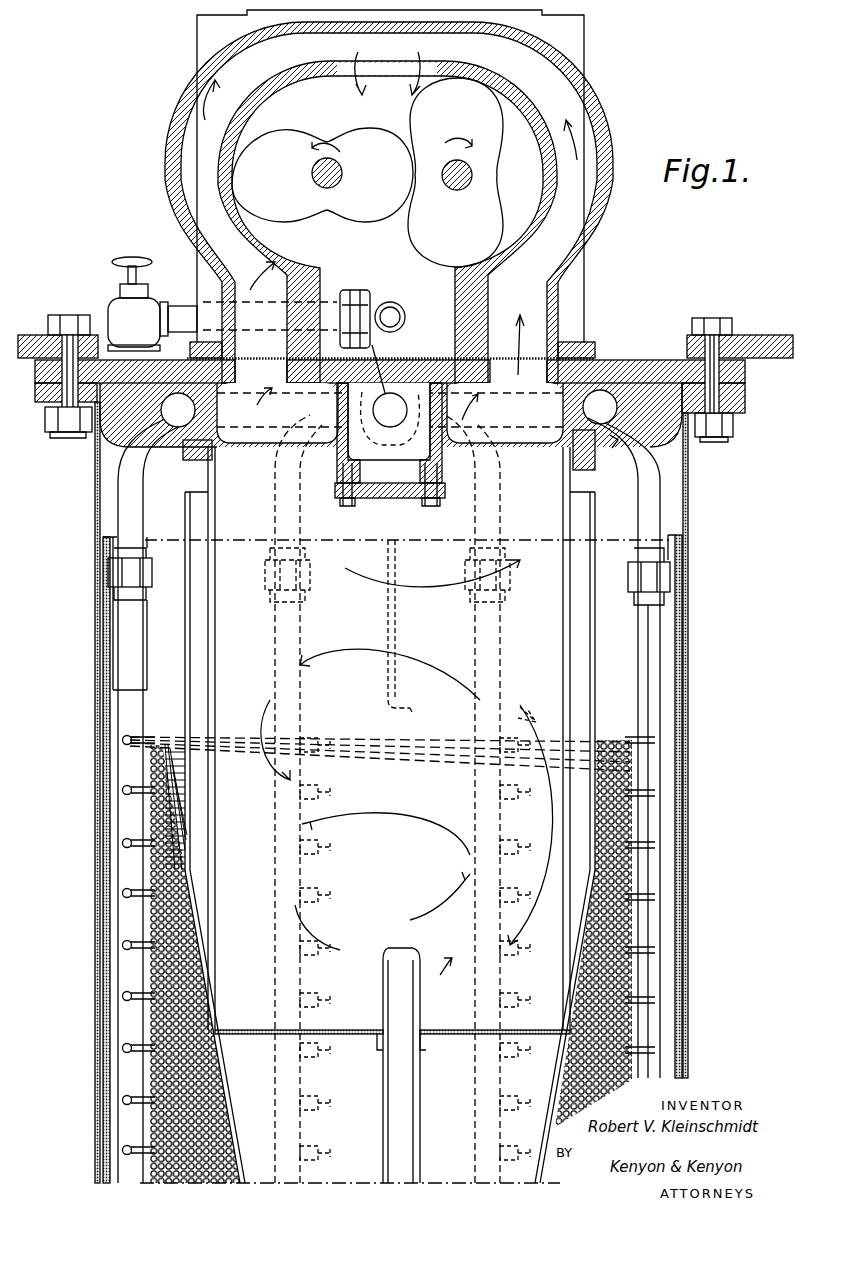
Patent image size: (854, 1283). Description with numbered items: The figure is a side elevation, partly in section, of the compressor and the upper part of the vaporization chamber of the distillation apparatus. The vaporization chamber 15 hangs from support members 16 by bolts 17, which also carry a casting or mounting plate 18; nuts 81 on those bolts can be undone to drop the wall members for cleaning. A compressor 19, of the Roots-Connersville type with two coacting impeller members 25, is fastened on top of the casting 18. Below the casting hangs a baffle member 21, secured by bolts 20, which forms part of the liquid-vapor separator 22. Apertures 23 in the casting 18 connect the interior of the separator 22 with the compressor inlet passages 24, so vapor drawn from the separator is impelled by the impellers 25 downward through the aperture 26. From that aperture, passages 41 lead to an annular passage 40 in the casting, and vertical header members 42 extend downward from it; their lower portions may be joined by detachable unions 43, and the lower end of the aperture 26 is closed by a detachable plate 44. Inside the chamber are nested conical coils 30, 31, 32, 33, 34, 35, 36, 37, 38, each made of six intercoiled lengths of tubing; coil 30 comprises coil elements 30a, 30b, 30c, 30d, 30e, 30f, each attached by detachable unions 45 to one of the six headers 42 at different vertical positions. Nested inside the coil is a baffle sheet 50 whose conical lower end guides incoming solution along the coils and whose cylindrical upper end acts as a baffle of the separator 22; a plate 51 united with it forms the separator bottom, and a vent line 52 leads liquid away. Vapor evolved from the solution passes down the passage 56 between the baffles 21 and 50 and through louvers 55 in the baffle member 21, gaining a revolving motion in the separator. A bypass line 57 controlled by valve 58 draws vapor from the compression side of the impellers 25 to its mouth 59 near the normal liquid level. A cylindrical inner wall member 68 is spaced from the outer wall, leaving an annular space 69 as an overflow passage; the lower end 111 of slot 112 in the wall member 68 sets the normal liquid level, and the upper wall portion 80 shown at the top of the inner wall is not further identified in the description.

The vaporization chamber 15 is at (690, 500).
The support members 16 is at (38, 335).
The bolts 17 is at (62, 365).
The casting or mounting plate 18 is at (618, 360).
The compressor 19 is at (594, 93).
The bolts 20 is at (592, 466).
The baffle member 21 is at (568, 492).
The liquid-vapor separator 22 is at (389, 738).
The apertures 23 is at (524, 368).
The inlet passages 24 is at (598, 222).
The impeller members 25 is at (367, 172).
The aperture 26 is at (400, 396).
The conical coil 30 is at (152, 756).
The coil element 30a is at (634, 738).
The coil element 30b is at (634, 750).
The coil element 30c is at (634, 759).
The coil element 30d is at (634, 770).
The coil element 30e is at (183, 818).
The coil element 30f is at (184, 830).
The conical coil 31 is at (152, 846).
The conical coil 32 is at (152, 897).
The conical coil 33 is at (152, 950).
The conical coil 34 is at (152, 1001).
The conical coil 35 is at (152, 1051).
The conical coil 36 is at (152, 1101).
The conical coil 37 is at (152, 1151).
The conical coil 38 is at (155, 1177).
The annular passage 40 is at (603, 408).
The passages 41 is at (389, 414).
The vertical header members 42 is at (302, 645).
The detachable unions 43 is at (632, 577).
The detachable plate 44 is at (405, 498).
The detachable unions 45 is at (407, 799).
The baffle sheet 50 is at (640, 680).
The plate 51 is at (440, 1036).
The vent line 52 is at (420, 1117).
The louvers 55 is at (405, 963).
The passage 56 is at (582, 590).
The bypass line 57 is at (388, 303).
The valve 58 is at (112, 305).
The mouth 59 is at (118, 692).
The cylindrical inner wall member 68 is at (684, 672).
The annular space 69 is at (684, 620).
The shell top 80 is at (682, 540).
The nuts 81 is at (62, 422).
The lower end of slot 111 is at (388, 708).
The slot 112 is at (398, 622).